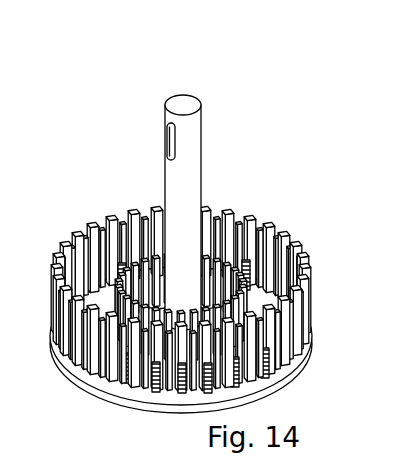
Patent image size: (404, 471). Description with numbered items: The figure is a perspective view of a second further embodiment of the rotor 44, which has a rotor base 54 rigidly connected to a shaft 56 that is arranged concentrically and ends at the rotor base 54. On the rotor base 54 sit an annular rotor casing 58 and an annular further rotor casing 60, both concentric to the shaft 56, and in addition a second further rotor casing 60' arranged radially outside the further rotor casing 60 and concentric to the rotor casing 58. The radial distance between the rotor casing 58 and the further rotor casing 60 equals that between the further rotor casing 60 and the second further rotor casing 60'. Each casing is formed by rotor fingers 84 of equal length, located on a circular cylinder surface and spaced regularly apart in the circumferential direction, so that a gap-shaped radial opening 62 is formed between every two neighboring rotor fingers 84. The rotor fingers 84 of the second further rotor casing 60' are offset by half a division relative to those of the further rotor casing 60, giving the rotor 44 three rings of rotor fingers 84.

The rotor 44 is at (140, 106).
The rotor base 54 is at (205, 302).
The shaft 56 is at (192, 128).
The rotor casing 58 is at (247, 279).
The further rotor casing 60 is at (306, 221).
The second further rotor casing 60' is at (334, 254).
The gap-shaped radial opening 62 is at (158, 210).
The rotor fingers 84 is at (200, 345).